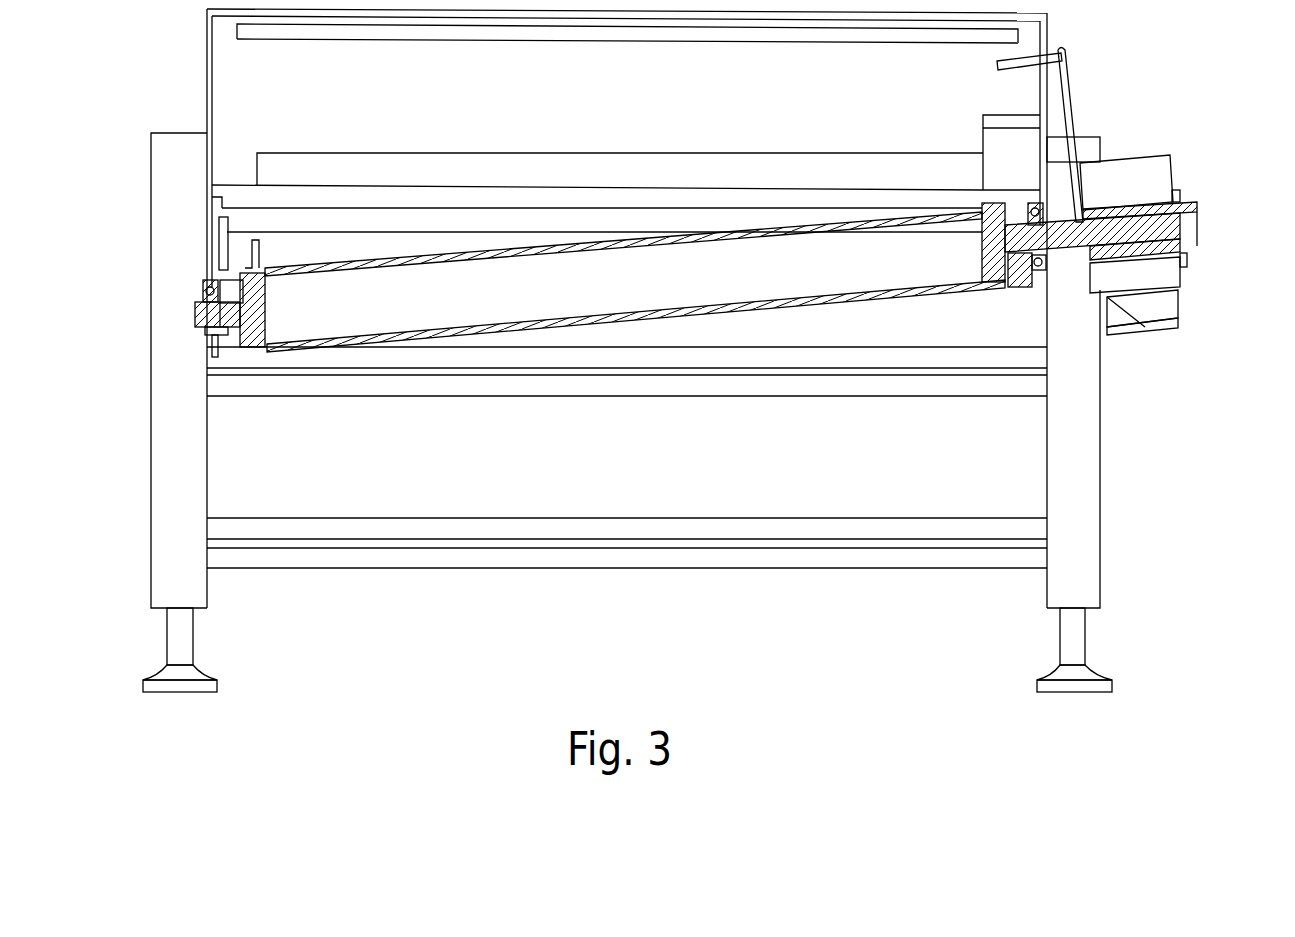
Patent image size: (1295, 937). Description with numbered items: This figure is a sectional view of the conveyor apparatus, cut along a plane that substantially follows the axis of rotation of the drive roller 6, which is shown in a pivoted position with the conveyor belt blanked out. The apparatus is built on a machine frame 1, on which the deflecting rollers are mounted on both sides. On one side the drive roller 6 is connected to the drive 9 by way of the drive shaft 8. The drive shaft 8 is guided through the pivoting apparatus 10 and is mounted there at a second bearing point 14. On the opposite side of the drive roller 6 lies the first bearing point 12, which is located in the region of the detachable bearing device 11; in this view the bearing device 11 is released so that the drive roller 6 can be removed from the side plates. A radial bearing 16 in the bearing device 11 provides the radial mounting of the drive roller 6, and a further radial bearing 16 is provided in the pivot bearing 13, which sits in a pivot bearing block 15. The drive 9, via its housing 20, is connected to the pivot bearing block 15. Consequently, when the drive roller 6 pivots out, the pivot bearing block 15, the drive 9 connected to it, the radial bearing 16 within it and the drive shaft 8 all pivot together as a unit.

The machine frame 1 is at (1075, 519).
The drive roller 6 is at (298, 314).
The drive shaft 8 is at (1183, 254).
The drive 9 is at (1130, 273).
The pivoting apparatus 10 is at (1048, 212).
The detachable bearing device 11 is at (205, 297).
The first bearing point 12 is at (210, 336).
The pivot bearing 13 is at (1187, 352).
The second bearing point 14 is at (1150, 330).
The pivot bearing block 15 is at (1040, 205).
The radial bearing 16 is at (207, 290).
The housing 20 is at (1197, 225).